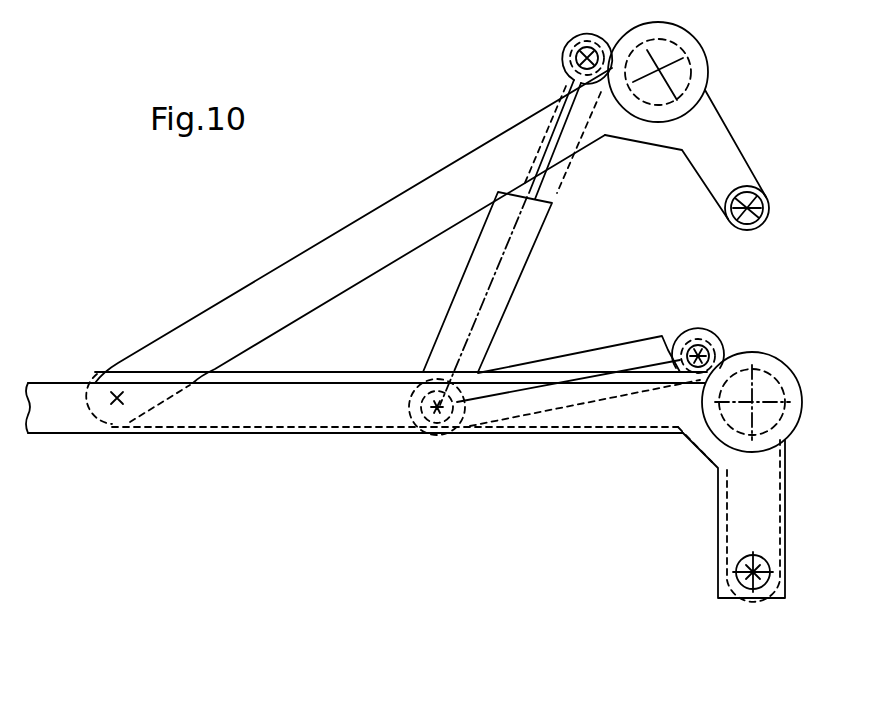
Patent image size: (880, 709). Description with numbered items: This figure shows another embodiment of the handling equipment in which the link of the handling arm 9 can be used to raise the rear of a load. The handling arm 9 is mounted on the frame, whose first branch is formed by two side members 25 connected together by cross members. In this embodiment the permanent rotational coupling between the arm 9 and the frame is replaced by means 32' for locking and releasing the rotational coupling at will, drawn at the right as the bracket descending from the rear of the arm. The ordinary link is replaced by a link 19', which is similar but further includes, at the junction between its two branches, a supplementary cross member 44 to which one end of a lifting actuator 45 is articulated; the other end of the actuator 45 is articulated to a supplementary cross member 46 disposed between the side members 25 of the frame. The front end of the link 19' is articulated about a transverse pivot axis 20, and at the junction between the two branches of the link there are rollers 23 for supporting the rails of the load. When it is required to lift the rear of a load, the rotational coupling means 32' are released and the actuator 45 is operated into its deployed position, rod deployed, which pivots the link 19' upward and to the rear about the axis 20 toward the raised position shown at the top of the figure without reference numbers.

The handling arm 9 is at (222, 443).
The link 19' is at (401, 277).
The transverse pivot axis 20 is at (117, 405).
The rollers 23 is at (783, 370).
The side members 25 is at (386, 410).
The means for locking and releasing the rotational coupling 32' is at (707, 549).
The supplementary cross member 44 is at (705, 340).
The lifting actuator 45 is at (598, 350).
The supplementary cross member 46 is at (437, 443).